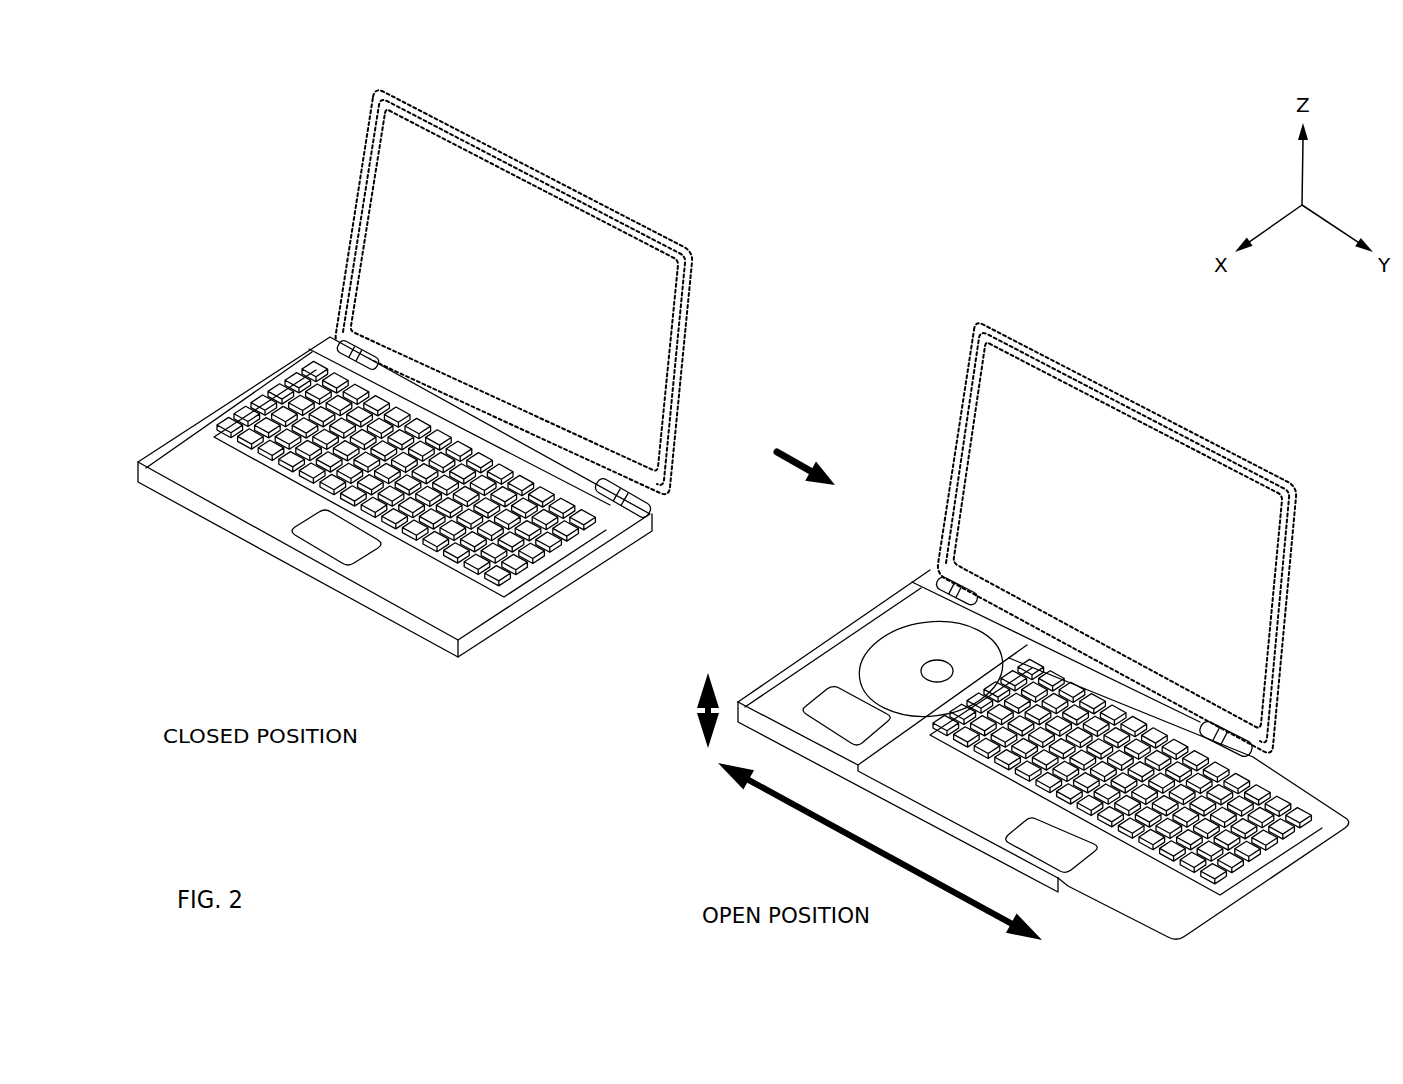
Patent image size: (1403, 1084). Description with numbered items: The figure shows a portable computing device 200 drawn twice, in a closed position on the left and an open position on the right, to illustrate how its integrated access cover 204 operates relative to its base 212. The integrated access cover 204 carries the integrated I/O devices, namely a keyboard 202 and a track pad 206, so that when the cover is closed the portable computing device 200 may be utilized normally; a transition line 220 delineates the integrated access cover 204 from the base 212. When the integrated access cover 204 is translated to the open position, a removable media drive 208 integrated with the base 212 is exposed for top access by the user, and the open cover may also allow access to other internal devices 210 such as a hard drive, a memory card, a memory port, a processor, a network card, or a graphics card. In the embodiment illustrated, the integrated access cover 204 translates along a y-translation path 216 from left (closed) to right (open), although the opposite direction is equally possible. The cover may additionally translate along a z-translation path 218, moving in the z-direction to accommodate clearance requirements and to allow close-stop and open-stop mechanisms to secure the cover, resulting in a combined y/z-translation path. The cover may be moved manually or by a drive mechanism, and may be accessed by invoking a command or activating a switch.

The portable computing device 200 is at (246, 165).
The keyboard 202 is at (267, 408).
The integrated access cover 204 is at (467, 622).
The track pad 206 is at (290, 530).
The removable media drive 208 is at (877, 630).
The other internal devices 210 is at (833, 685).
The base 212 is at (374, 613).
The y-translation path 216 is at (847, 838).
The z-translation path 218 is at (695, 720).
The transition line 220 is at (654, 516).